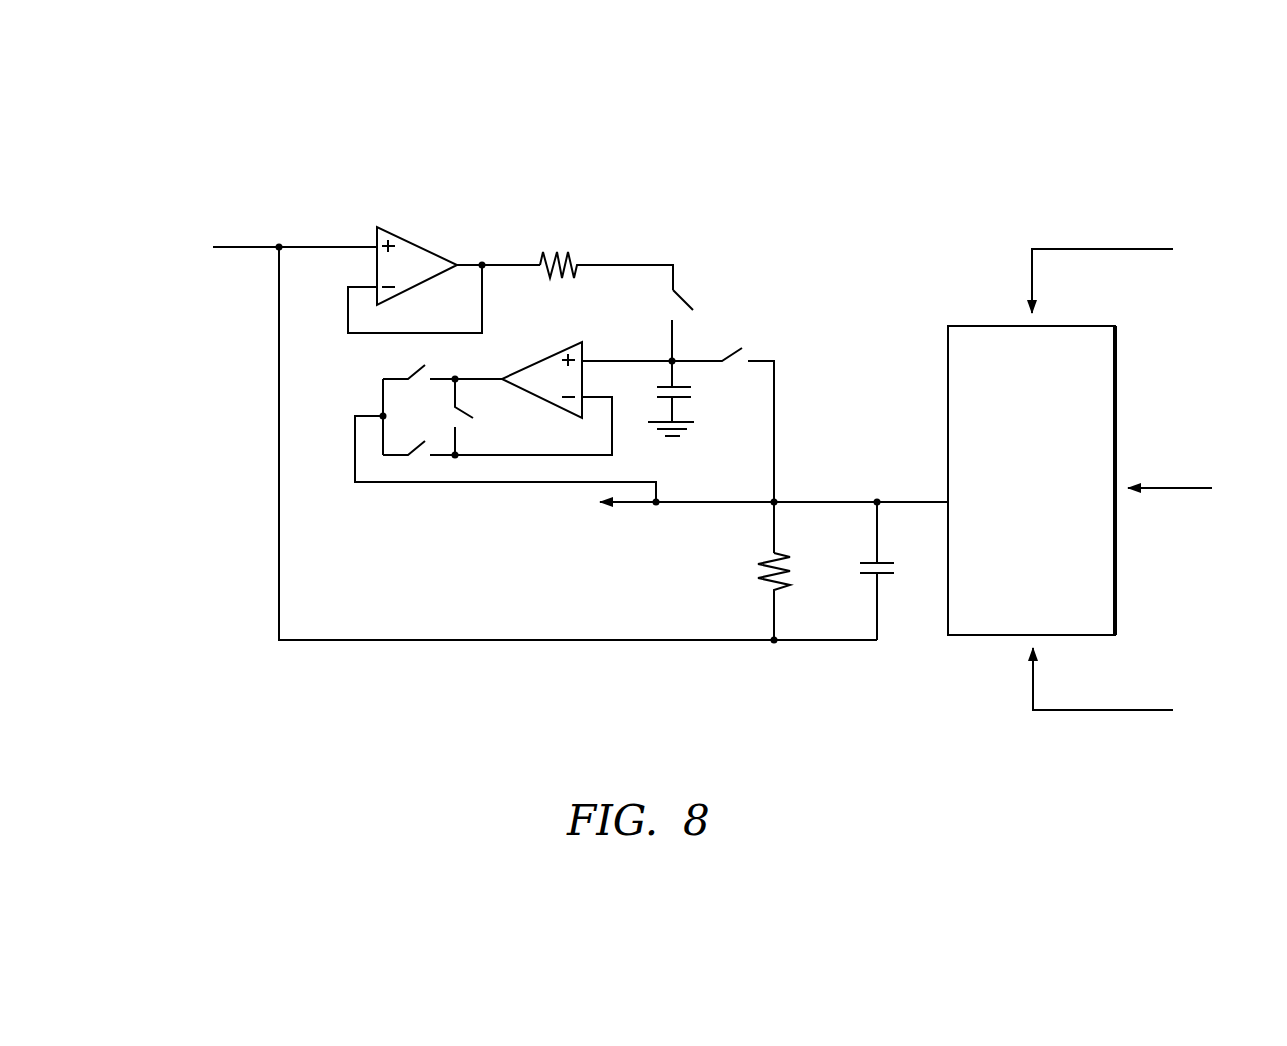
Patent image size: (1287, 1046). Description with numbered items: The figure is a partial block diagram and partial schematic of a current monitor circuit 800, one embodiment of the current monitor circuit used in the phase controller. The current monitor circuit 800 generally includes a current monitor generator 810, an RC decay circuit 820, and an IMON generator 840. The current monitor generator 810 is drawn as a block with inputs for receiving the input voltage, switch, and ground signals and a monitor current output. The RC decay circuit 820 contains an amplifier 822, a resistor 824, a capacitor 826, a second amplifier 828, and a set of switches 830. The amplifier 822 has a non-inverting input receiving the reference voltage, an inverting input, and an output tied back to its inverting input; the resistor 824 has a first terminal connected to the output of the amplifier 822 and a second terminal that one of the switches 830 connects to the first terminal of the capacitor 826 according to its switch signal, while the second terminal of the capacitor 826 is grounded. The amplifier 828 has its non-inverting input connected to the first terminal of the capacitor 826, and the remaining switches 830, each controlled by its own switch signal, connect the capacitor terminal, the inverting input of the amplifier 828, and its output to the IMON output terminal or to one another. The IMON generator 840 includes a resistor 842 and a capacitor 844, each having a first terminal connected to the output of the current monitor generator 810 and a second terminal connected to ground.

The current monitor circuit 800 is at (141, 129).
The current monitor generator 810 is at (972, 324).
The RC decay circuit 820 is at (509, 160).
The amplifier 822 is at (413, 243).
The resistor 824 is at (568, 253).
The capacitor 826 is at (688, 400).
The amplifier 828 is at (540, 360).
The set of switches 830 is at (756, 330).
The IMON generator 840 is at (830, 468).
The resistor 842 is at (762, 586).
The capacitor 844 is at (886, 578).